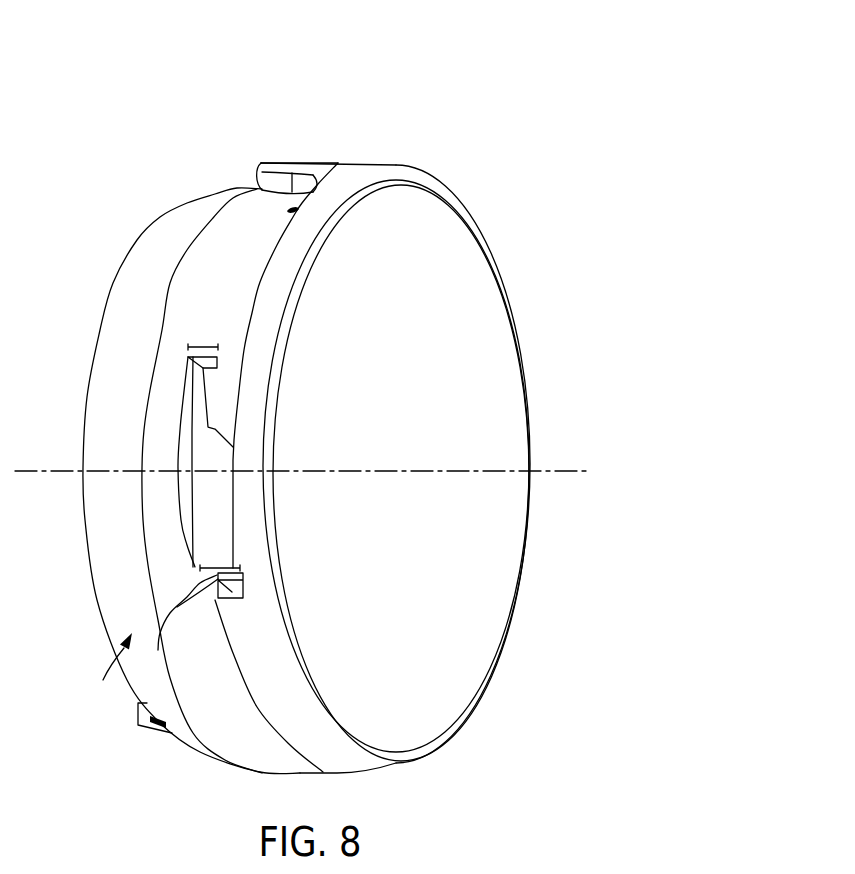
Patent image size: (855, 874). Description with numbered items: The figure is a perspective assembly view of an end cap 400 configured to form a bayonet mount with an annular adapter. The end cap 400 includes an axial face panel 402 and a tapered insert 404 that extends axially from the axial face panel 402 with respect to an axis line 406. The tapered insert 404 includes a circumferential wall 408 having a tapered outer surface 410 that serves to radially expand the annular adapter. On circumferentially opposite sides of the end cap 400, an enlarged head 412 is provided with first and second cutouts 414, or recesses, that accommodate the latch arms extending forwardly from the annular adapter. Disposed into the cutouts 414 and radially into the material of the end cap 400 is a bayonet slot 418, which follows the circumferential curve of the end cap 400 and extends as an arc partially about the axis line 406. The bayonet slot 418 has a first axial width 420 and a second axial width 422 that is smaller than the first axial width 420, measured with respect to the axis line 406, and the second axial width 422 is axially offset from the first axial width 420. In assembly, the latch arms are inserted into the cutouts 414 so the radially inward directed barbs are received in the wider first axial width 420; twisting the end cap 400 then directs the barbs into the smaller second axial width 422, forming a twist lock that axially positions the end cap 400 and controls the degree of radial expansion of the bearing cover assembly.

The end cap 400 is at (466, 77).
The axial face panel 402 is at (495, 593).
The tapered insert 404 is at (160, 217).
The axis line 406 is at (558, 471).
The circumferential wall 408 is at (98, 510).
The tapered outer surface 410 is at (111, 674).
The enlarged head 412 is at (296, 163).
The cutouts 414 is at (272, 178).
The bayonet slot 418 is at (190, 541).
The first axial width 420 is at (218, 578).
The second axial width 422 is at (203, 343).